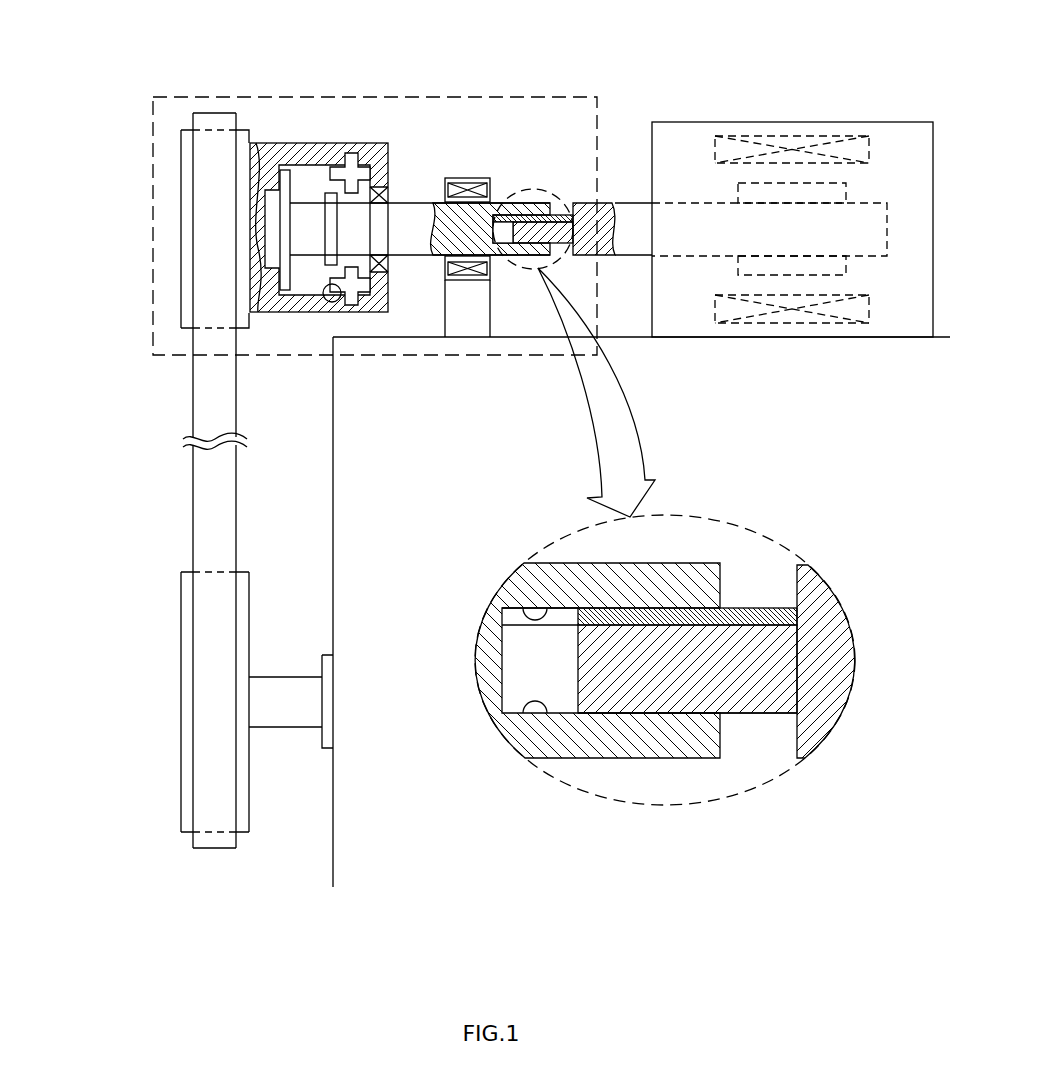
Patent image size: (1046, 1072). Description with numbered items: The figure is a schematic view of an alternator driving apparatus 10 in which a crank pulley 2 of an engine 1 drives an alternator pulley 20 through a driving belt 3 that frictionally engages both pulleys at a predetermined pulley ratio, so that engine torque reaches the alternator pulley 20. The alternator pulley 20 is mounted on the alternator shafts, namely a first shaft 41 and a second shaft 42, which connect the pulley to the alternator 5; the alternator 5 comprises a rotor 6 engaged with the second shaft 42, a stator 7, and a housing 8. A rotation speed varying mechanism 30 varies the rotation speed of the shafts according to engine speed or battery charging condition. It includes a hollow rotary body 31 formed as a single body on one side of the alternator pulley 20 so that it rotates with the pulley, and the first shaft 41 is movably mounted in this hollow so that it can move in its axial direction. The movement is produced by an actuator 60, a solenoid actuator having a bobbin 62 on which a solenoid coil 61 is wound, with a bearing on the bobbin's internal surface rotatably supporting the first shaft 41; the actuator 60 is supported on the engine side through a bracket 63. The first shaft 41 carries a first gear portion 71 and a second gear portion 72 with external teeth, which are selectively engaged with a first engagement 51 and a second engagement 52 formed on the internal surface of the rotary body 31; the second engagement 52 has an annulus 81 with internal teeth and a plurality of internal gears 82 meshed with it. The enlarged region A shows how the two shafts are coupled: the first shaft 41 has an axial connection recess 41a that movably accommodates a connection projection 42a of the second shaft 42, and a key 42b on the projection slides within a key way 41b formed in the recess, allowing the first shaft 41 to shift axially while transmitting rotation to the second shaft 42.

The enlarged region A is at (153, 90).
The engine 1 is at (340, 863).
The crank pulley 2 is at (190, 742).
The driving belt 3 is at (205, 502).
The alternator 5 is at (792, 185).
The rotor 6 is at (750, 183).
The stator 7 is at (797, 137).
The housing 8 is at (918, 122).
The alternator driving apparatus 10 is at (321, 204).
The alternator pulley 20 is at (168, 299).
The rotation speed varying mechanism 30 is at (319, 176).
The rotary body 31 is at (303, 143).
The first shaft 41 is at (413, 218).
The connection recess 41a is at (540, 716).
The key way 41b is at (522, 606).
The second shaft 42 is at (622, 213).
The connection projection 42a is at (758, 705).
The key 42b is at (760, 610).
The first engagement 51 is at (268, 263).
The second engagement 52 is at (355, 132).
The actuator 60 is at (499, 221).
The solenoid coil 61 is at (490, 186).
The bobbin 62 is at (448, 178).
The bracket 63 is at (482, 312).
The first gear portion 71 is at (274, 192).
The second gear portion 72 is at (326, 265).
The annulus 81 is at (326, 301).
The internal gears 82 is at (353, 300).